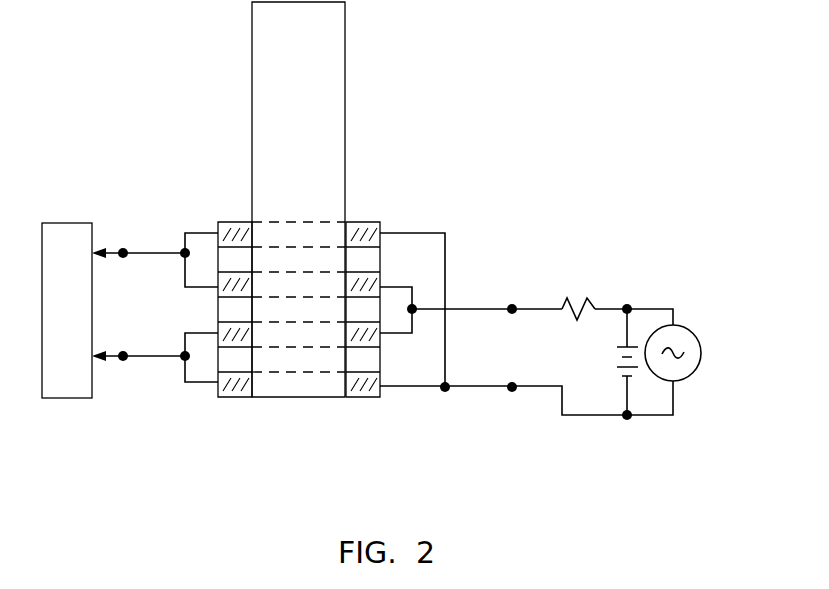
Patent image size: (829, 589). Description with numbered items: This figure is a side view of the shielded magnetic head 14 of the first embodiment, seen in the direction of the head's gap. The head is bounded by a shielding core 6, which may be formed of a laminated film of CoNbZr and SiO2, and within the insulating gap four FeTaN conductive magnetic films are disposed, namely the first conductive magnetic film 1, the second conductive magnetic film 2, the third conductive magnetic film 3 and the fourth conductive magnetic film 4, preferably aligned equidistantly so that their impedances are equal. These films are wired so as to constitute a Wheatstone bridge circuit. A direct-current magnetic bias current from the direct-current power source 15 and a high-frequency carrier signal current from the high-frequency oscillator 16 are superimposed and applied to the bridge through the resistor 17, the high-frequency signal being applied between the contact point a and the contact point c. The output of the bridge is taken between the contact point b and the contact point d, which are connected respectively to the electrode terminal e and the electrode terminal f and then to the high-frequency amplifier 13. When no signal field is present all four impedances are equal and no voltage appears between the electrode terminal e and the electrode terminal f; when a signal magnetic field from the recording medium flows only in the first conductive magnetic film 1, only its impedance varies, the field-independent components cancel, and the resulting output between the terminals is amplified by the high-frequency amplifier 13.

The first conductive magnetic film 1 is at (277, 383).
The second conductive magnetic film 2 is at (305, 337).
The third conductive magnetic film 3 is at (288, 283).
The fourth conductive magnetic film 4 is at (293, 232).
The shielding core 6 is at (251, 70).
The high-frequency amplifier 13 is at (67, 385).
The magnetic head 14 is at (367, 402).
The direct-current power source 15 is at (615, 362).
The high-frequency oscillator 16 is at (688, 377).
The resistor 17 is at (582, 297).
The contact point a is at (445, 403).
The contact point b is at (168, 343).
The contact point c is at (412, 309).
The contact point d is at (168, 267).
The electrode terminal e is at (123, 240).
The electrode terminal f is at (122, 370).